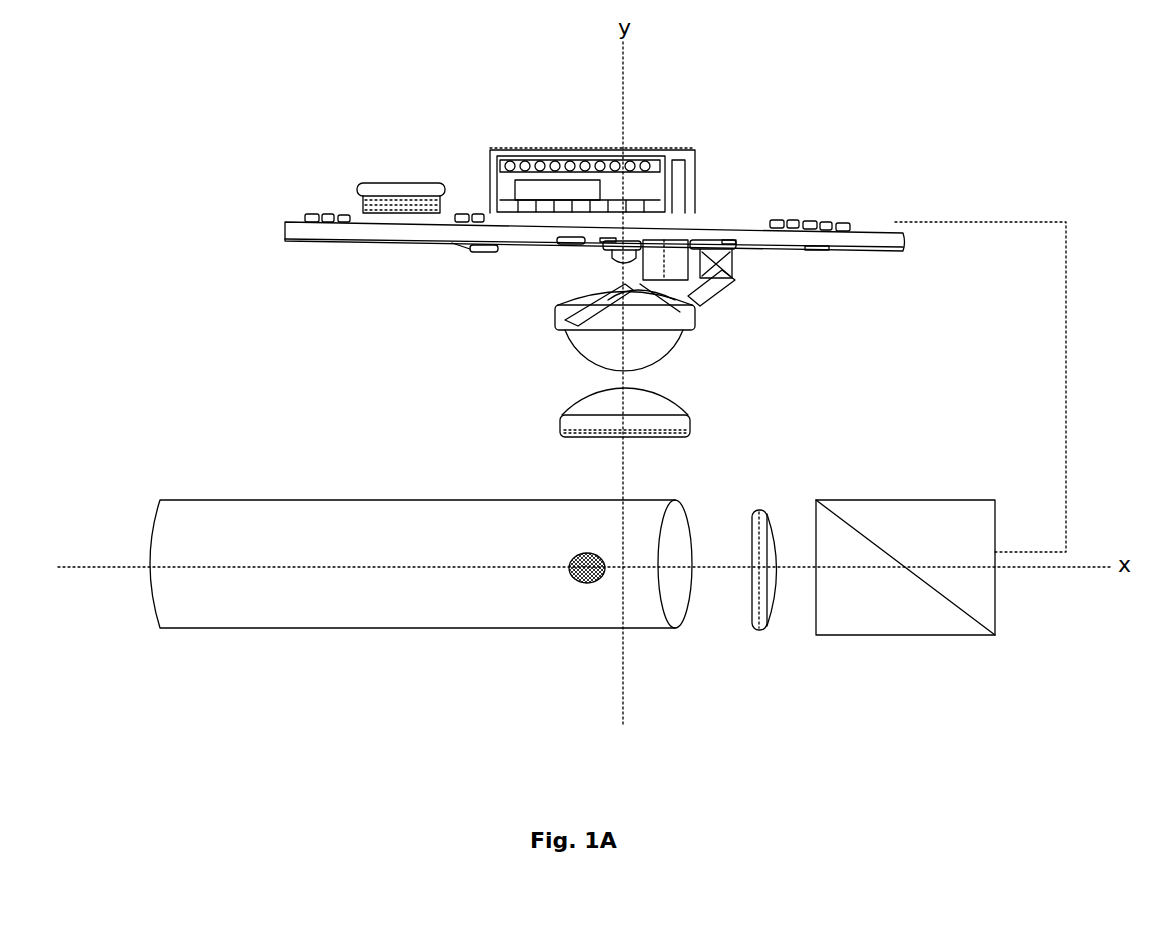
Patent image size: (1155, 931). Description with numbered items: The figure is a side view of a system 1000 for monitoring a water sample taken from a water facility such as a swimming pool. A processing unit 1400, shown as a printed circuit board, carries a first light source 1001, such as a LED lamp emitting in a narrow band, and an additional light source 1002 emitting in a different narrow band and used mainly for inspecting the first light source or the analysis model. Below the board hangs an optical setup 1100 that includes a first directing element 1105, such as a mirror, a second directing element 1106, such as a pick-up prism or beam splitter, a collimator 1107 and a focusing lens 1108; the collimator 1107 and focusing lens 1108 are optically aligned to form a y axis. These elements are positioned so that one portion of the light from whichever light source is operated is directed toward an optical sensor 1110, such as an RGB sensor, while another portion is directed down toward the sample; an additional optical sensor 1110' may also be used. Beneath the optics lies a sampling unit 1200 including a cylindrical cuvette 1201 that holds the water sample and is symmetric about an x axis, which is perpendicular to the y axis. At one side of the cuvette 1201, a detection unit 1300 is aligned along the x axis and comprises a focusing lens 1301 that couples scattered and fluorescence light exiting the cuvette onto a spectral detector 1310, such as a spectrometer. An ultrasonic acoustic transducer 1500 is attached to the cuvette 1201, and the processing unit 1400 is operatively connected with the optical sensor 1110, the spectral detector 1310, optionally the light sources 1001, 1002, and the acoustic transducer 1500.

The system 1000 is at (926, 146).
The first light source 1001 is at (615, 263).
The additional light source 1002 is at (722, 262).
The optical setup 1100 is at (858, 262).
The first directing element 1105 is at (600, 302).
The second directing element 1106 is at (700, 297).
The collimator 1107 is at (568, 329).
The focusing lens 1108 is at (565, 416).
The optical sensor 1110 is at (460, 189).
The additional optical sensor 1110' is at (541, 166).
The sampling unit 1200 is at (147, 715).
The cuvette 1201 is at (318, 630).
The detection unit 1300 is at (740, 705).
The focusing lens 1301 is at (770, 615).
The spectral detector 1310 is at (938, 635).
The processing unit 1400 is at (287, 235).
The acoustic transducer 1500 is at (588, 583).